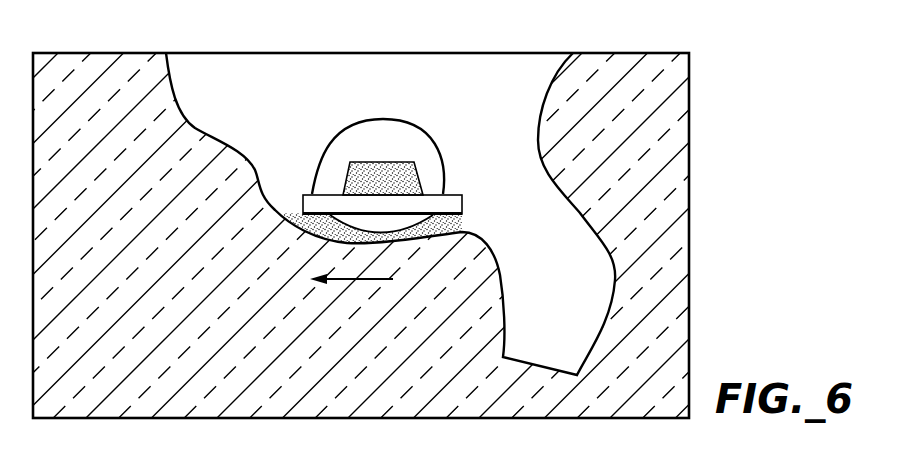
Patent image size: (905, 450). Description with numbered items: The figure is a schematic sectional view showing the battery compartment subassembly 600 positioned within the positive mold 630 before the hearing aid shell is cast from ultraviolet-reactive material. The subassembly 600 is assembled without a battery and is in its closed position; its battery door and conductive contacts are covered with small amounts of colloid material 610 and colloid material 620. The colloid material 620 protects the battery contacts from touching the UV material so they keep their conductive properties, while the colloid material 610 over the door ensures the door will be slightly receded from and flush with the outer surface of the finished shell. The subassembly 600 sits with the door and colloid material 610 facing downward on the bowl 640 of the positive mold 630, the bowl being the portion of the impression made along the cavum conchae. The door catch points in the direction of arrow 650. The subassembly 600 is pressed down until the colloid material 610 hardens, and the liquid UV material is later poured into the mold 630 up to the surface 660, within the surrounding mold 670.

The battery compartment subassembly 600 is at (417, 181).
The colloid material over battery door 610 is at (450, 225).
The colloid material over battery contacts 620 is at (405, 186).
The positive mold 630 is at (180, 302).
The bowl 640 is at (387, 250).
The arrow 650 is at (357, 279).
The surface 660 is at (398, 150).
The housing 670 is at (396, 44).